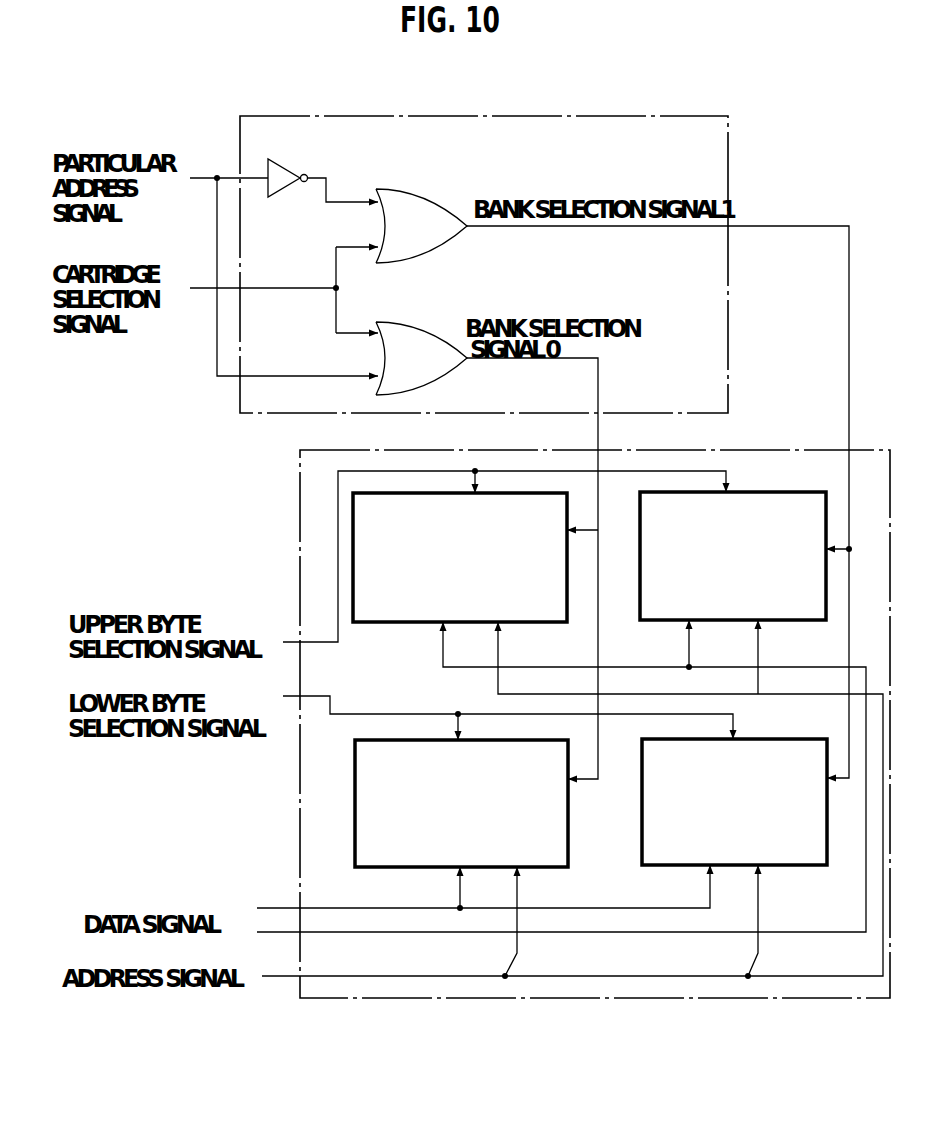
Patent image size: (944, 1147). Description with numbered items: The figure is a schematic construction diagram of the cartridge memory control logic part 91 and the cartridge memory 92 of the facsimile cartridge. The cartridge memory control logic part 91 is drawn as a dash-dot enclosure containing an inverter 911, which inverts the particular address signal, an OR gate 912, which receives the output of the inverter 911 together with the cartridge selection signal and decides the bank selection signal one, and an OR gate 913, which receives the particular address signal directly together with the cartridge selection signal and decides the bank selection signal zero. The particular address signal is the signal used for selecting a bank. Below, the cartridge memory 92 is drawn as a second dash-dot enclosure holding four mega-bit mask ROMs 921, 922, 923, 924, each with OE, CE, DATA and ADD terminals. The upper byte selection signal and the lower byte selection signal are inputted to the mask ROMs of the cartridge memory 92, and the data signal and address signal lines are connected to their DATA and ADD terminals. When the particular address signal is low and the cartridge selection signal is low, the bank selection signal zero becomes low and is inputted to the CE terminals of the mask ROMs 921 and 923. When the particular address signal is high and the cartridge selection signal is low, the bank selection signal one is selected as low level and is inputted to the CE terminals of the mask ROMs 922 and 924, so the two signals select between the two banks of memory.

The cartridge memory control logic part 91 is at (728, 160).
The inverter 911 is at (283, 165).
The OR gate 912 is at (438, 195).
The OR gate 913 is at (440, 328).
The cartridge memory 92 is at (750, 450).
The 4M bit mask ROM 921 is at (407, 623).
The 4M bit mask ROM 922 is at (782, 492).
The 4M bit mask ROM 923 is at (565, 868).
The 4M bit mask ROM 924 is at (788, 866).